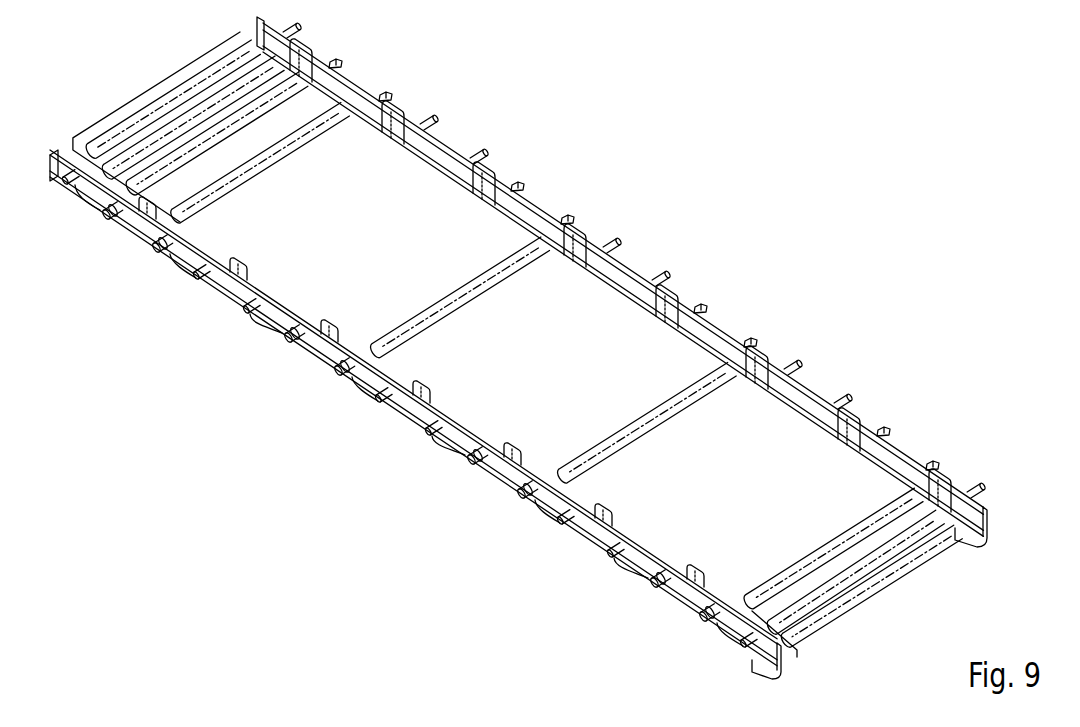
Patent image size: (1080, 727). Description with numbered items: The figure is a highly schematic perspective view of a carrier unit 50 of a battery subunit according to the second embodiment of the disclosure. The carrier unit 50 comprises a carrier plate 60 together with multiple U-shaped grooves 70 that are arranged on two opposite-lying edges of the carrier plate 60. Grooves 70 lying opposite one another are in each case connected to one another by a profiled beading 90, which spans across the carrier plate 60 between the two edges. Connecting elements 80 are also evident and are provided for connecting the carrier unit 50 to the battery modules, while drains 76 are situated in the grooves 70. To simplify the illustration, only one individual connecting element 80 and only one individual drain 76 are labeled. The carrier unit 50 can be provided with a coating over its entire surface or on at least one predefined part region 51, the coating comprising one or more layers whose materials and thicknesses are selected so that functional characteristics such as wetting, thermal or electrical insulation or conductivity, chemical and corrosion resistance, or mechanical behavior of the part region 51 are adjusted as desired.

The carrier unit 50 is at (541, 357).
The predefined part region 51 is at (422, 193).
The carrier plate 60 is at (142, 86).
The U-shaped groove 70 is at (984, 546).
The drain 76 is at (647, 572).
The connecting element 80 is at (742, 645).
The profiled beading 90 is at (790, 443).